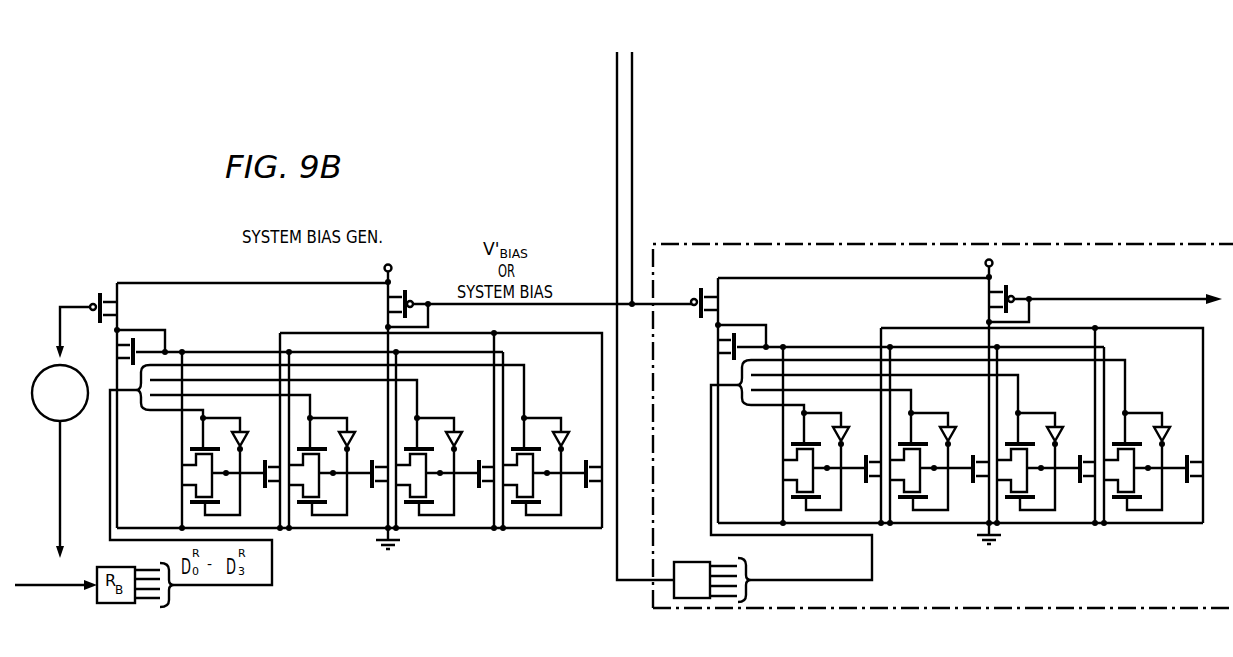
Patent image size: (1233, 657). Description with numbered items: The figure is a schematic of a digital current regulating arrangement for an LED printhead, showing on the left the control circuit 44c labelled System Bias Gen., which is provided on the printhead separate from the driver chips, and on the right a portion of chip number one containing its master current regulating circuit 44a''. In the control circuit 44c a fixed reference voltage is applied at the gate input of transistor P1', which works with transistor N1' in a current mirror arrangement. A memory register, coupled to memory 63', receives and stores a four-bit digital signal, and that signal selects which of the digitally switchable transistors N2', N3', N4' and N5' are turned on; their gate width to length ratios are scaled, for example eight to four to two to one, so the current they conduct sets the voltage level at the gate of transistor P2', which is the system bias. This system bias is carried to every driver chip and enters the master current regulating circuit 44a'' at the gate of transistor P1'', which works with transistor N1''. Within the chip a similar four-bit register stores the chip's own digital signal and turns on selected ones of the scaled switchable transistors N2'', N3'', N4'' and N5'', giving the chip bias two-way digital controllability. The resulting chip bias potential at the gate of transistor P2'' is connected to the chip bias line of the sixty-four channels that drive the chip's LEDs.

The control circuit 44c is at (160, 267).
The master current regulating circuit 44a'' is at (943, 426).
The memory 63' is at (56, 576).
The transistor P1' is at (103, 325).
The transistor N1' is at (125, 351).
The transistor P2' is at (390, 304).
The digitally switchable transistor N2' is at (265, 485).
The digitally switchable transistor N3' is at (372, 485).
The digitally switchable transistor N4' is at (479, 485).
The digitally switchable transistor N5' is at (586, 485).
The transistor P1'' is at (726, 303).
The transistor N1'' is at (724, 346).
The transistor P2'' is at (989, 299).
The digitally switchable transistor N2'' is at (865, 480).
The digitally switchable transistor N3'' is at (972, 480).
The digitally switchable transistor N4'' is at (1079, 480).
The digitally switchable transistor N5'' is at (1186, 480).